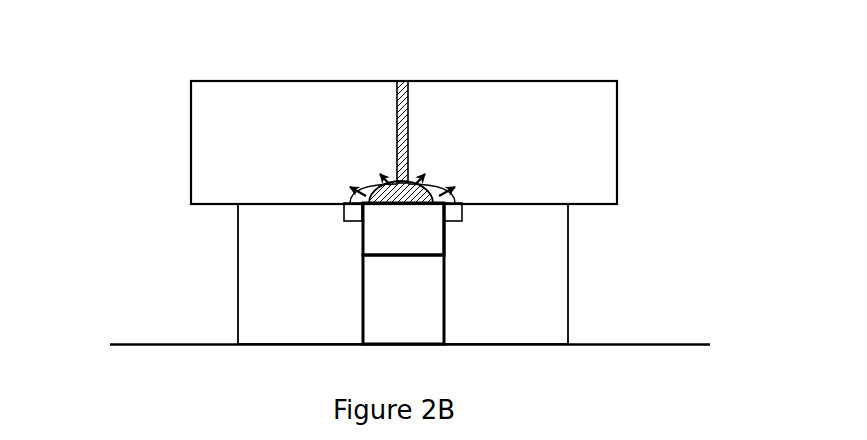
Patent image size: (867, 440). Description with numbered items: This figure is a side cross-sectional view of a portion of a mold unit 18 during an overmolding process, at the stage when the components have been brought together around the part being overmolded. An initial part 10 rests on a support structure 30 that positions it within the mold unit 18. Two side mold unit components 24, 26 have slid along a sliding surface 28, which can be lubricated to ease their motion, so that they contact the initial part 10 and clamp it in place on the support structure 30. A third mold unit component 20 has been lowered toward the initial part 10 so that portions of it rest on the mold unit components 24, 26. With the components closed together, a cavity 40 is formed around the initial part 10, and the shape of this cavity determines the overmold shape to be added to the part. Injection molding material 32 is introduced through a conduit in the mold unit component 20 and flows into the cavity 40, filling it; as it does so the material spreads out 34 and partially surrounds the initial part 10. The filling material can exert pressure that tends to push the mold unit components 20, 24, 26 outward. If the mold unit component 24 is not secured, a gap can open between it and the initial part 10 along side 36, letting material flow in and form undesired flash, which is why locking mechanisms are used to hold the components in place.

The mold unit 18 is at (116, 74).
The mold unit component 20 is at (307, 90).
The injection molding material 32 is at (408, 81).
The spreading out of injection molding material 34 is at (352, 193).
The cavity 40 is at (460, 200).
The mold unit component 26 is at (270, 328).
The mold unit component 24 is at (558, 328).
The initial part 10 is at (415, 239).
The support structure 30 is at (415, 335).
The side 36 is at (444, 235).
The sliding surface 28 is at (662, 345).